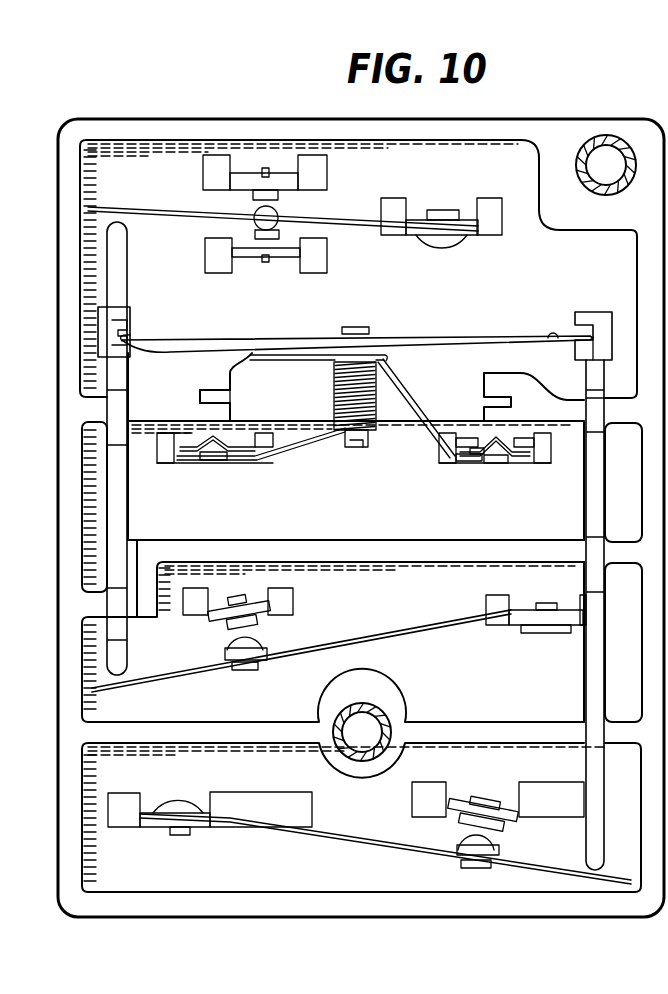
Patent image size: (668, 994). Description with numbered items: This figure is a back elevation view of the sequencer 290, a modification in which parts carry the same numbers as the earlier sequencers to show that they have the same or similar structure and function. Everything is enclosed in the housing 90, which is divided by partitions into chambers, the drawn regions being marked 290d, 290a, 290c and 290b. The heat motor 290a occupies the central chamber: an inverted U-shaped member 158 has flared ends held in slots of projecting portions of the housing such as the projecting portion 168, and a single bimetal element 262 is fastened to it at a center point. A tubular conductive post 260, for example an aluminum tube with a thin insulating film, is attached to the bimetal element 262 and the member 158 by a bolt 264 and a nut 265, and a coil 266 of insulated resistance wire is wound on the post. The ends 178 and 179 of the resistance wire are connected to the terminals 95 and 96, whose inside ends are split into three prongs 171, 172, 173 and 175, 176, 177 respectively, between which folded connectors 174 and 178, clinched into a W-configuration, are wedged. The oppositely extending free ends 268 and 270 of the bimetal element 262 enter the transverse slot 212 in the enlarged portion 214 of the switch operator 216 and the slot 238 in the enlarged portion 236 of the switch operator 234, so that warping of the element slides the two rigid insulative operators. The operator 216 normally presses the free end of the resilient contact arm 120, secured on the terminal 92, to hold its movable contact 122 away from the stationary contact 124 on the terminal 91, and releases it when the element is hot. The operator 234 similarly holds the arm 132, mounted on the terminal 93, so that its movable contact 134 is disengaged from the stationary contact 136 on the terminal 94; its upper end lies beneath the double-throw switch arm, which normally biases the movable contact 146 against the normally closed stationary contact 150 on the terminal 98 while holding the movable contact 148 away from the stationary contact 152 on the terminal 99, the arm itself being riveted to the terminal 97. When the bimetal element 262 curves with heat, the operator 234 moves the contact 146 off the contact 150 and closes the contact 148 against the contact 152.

The sequencer 290 is at (62, 122).
The housing 90 is at (58, 268).
The upper compartment 290d is at (368, 196).
The heat motor 290a is at (360, 513).
The lower middle compartment 290c is at (345, 662).
The bottom compartment 290b is at (266, 849).
The terminal 99 is at (325, 181).
The stationary contact 152 is at (269, 192).
The movable contact 148 is at (280, 212).
The movable contact 146 is at (255, 221).
The stationary contact 150 is at (260, 240).
The terminal 98 is at (283, 250).
The terminal 97 is at (453, 236).
The bimetal element 262 is at (470, 343).
The free end 270 is at (148, 340).
The nut 265 is at (358, 326).
The free end 268 is at (552, 343).
The enlarged portion 214 is at (605, 330).
The transverse slot 212 is at (580, 334).
The enlarged portion 236 is at (100, 340).
The slot 238 is at (130, 320).
The switch operator 234 is at (118, 512).
The switch operator 216 is at (585, 516).
The projecting portion 168 is at (180, 398).
The inverted U-shaped member 158 is at (278, 361).
The post 260 is at (355, 449).
The bolt 264 is at (325, 440).
The coil 266 is at (372, 401).
The terminal 96 is at (181, 466).
The projecting prong 175 is at (185, 434).
The projecting prong 177 is at (250, 432).
The projecting prong 176 is at (216, 466).
The connector 178 is at (196, 470).
The end of resistance wire 179 is at (292, 462).
The terminal 95 is at (450, 466).
The projecting prong 173 is at (464, 444).
The connector 174 is at (518, 466).
The projecting prong 172 is at (477, 466).
The projecting prong 171 is at (553, 447).
The terminal 94 is at (250, 578).
The stationary contact 136 is at (226, 631).
The movable contact 134 is at (256, 646).
The resilient contact arm 132 is at (363, 640).
The terminal 93 is at (513, 626).
The terminal 92 is at (160, 828).
The contact arm 120 is at (330, 838).
The terminal 91 is at (459, 802).
The stationary contact 124 is at (470, 822).
The movable contact 122 is at (492, 846).